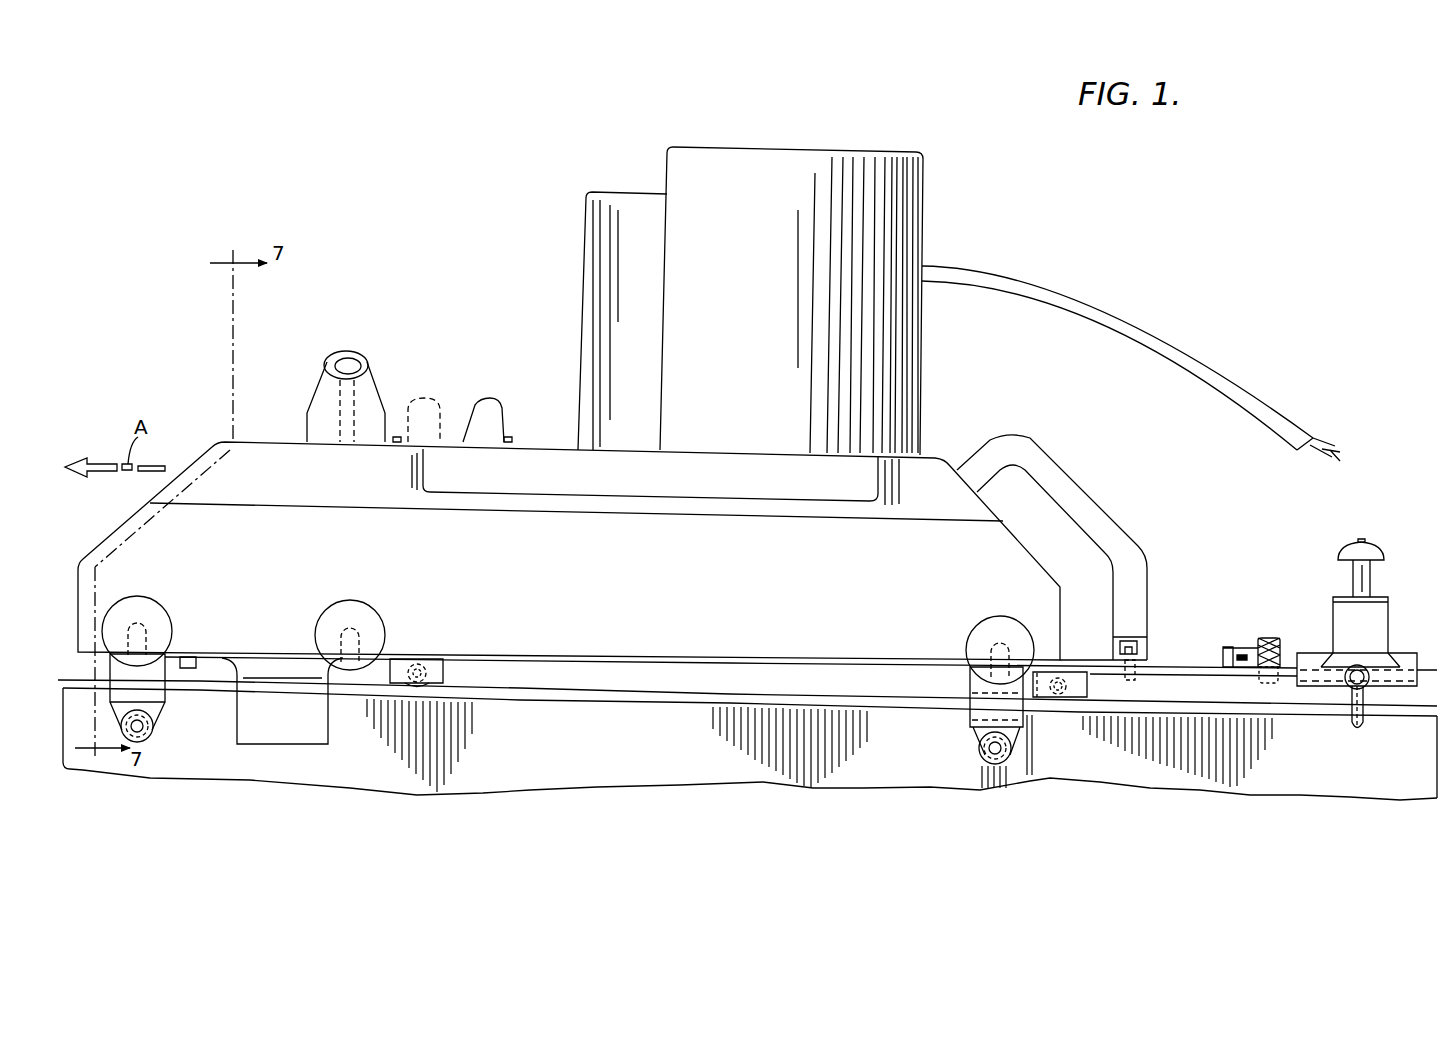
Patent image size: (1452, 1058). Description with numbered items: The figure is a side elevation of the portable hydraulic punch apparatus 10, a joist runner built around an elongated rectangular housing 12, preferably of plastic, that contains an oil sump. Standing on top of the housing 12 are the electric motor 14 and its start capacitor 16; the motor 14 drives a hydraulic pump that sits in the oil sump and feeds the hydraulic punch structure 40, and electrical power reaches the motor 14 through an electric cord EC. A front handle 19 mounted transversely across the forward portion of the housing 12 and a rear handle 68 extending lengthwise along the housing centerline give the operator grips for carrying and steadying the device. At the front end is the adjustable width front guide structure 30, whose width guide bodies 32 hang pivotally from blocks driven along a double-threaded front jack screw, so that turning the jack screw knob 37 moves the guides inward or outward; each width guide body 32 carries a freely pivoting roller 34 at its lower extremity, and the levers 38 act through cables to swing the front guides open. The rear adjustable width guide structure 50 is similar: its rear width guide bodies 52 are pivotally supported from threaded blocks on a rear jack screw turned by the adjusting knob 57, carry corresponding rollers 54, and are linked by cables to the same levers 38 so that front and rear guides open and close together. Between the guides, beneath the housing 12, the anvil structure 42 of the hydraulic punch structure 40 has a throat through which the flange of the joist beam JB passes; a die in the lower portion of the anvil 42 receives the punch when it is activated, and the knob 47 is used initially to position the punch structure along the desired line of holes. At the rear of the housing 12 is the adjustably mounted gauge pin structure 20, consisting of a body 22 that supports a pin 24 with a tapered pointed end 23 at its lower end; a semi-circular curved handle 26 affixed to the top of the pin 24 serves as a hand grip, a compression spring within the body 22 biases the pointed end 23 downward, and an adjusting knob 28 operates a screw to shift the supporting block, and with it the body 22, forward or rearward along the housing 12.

The portable hydraulic punch apparatus 10 is at (1165, 302).
The housing 12 is at (718, 596).
The electric motor 14 is at (776, 326).
The start capacitor 16 is at (639, 338).
The front handle 19 is at (353, 358).
The gauge pin structure 20 is at (1329, 619).
The body 22 is at (1370, 644).
The tapered pointed end 23 is at (1368, 688).
The pin 24 is at (1363, 578).
The semi-circular curved handle 26 is at (1373, 553).
The adjusting knob 28 is at (1267, 638).
The adjustable width front guide structure 30 is at (110, 788).
The width guide bodies 32 is at (149, 691).
The rollers 34 is at (157, 728).
The jack screw knob 37 is at (153, 610).
The levers 38 is at (488, 405).
The hydraulic punch structure 40 is at (267, 767).
The anvil structure 42 is at (289, 728).
The knob 47 is at (385, 618).
The rear adjustable width guide structure 50 is at (967, 792).
The rear width guide bodies 52 is at (977, 688).
The rear roller 54 is at (1010, 760).
The adjusting knob 57 is at (990, 620).
The rear handle 68 is at (1050, 482).
The electric cord EC is at (1187, 370).
The joist beam JB is at (579, 754).